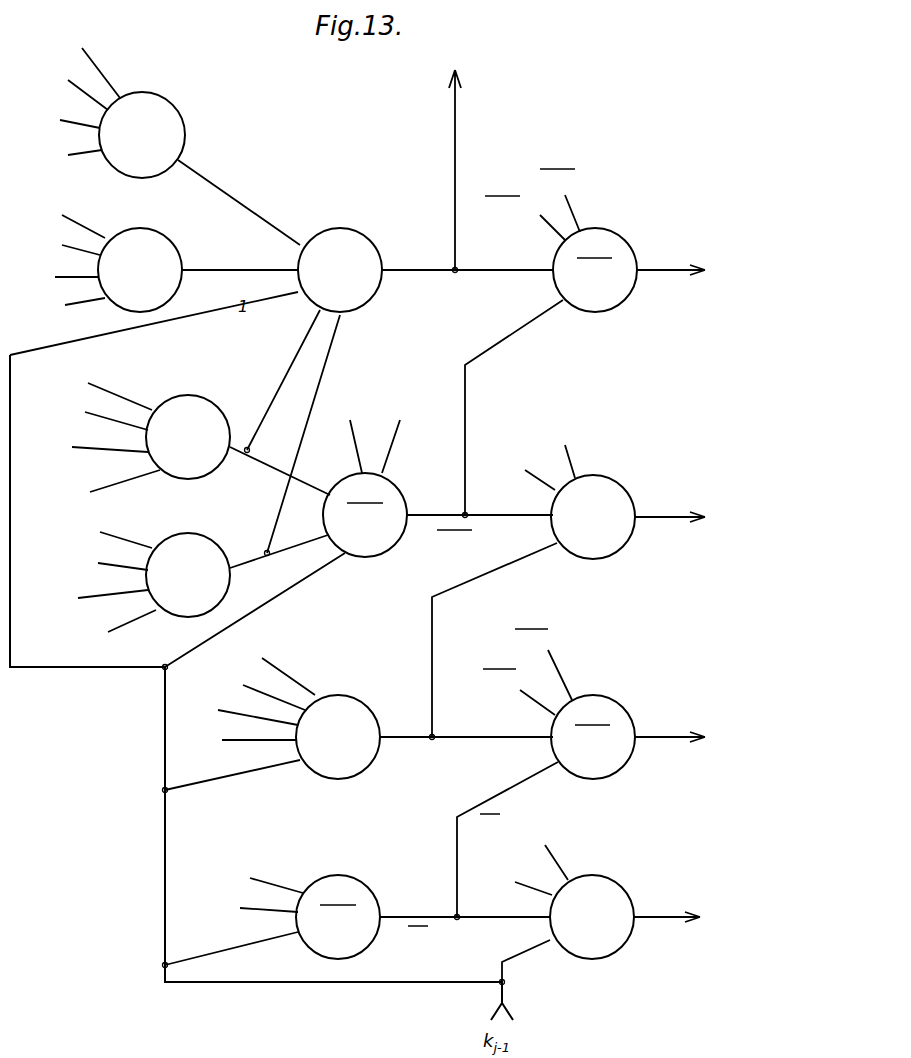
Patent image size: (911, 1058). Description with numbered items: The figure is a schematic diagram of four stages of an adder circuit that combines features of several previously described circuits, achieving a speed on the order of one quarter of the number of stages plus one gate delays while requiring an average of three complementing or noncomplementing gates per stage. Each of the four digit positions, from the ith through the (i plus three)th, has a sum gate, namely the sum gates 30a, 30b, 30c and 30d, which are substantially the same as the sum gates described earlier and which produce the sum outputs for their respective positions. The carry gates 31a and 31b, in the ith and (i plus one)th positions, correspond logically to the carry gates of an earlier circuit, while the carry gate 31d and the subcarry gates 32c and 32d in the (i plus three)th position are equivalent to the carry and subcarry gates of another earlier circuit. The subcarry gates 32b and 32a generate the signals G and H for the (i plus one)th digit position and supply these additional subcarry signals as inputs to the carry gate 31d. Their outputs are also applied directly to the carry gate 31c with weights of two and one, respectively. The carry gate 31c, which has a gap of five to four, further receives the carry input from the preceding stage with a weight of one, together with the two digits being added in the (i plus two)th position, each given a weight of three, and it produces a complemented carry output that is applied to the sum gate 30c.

The subcarry gate 32d is at (175, 110).
The subcarry gate 32c is at (150, 230).
The subcarry gate 32b is at (203, 400).
The subcarry gate 32a is at (200, 540).
The carry gate 31d is at (335, 232).
The carry gate 31c is at (368, 560).
The carry gate 31b is at (312, 775).
The carry gate 31a is at (355, 890).
The sum gate 30d is at (610, 310).
The sum gate 30c is at (605, 555).
The sum gate 30b is at (625, 710).
The sum gate 30a is at (622, 900).